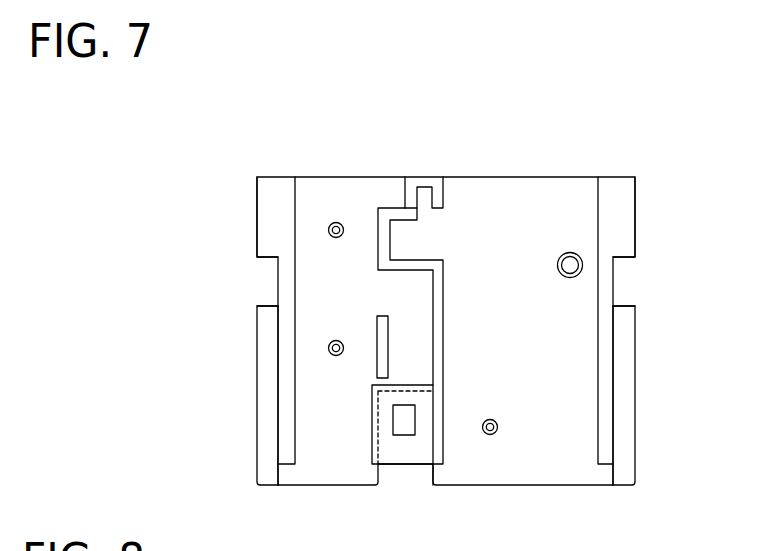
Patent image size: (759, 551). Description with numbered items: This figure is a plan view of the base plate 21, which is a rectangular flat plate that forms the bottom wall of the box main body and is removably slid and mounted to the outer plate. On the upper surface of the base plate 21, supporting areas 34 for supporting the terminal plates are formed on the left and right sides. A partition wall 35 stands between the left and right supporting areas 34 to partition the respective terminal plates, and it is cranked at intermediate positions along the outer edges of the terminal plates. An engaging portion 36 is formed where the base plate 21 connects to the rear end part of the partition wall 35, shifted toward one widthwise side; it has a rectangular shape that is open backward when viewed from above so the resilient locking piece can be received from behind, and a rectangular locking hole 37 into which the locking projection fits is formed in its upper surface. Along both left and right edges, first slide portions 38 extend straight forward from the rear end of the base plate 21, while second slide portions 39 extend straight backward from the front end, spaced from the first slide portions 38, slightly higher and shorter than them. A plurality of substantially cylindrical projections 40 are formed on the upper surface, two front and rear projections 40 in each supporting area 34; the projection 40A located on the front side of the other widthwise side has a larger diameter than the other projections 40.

The base plate 21 is at (507, 177).
The supporting area 34 is at (329, 395).
The partition wall 35 is at (386, 223).
The engaging portion 36 is at (417, 455).
The locking hole 37 is at (393, 420).
The first slide portion 38 is at (262, 376).
The second slide portion 39 is at (258, 215).
The projection 40 is at (335, 223).
The projection 40A is at (574, 252).